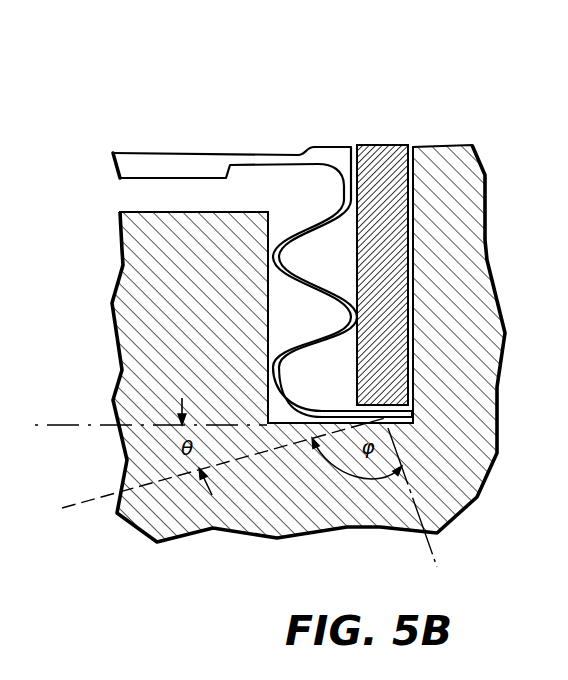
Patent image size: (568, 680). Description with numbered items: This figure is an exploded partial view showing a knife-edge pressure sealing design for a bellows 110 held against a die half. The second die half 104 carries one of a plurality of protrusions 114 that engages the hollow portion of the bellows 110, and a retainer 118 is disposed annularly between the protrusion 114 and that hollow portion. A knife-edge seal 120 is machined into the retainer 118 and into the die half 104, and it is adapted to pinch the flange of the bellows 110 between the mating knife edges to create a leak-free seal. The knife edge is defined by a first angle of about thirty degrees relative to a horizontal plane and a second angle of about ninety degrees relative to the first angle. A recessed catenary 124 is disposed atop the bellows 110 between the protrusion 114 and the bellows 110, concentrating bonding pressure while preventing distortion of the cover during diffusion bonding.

The second die half 104 is at (459, 130).
The bellows 110 is at (325, 85).
The protrusion 114 is at (160, 272).
The retainer 118 is at (400, 245).
The knife-edge seal 120 is at (386, 146).
The recessed catenary 124 is at (190, 158).